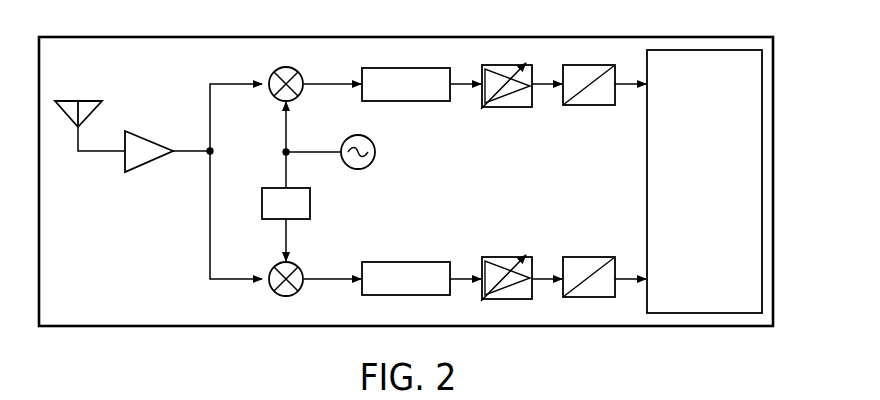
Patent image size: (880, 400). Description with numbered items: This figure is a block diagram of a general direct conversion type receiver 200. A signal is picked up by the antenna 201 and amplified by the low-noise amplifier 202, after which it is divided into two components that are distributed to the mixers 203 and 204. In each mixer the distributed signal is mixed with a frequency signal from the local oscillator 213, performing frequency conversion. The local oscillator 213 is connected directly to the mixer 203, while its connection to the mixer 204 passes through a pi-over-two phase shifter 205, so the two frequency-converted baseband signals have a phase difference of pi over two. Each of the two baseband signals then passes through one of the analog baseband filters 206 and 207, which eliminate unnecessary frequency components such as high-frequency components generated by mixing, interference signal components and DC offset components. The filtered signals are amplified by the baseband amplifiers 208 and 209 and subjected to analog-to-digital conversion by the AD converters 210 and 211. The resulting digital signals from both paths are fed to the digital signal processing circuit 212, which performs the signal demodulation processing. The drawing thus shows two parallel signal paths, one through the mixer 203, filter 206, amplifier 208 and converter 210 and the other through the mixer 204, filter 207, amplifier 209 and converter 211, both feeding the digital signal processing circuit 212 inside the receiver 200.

The direct conversion type receiver 200 is at (240, 37).
The antenna 201 is at (87, 100).
The low-noise amplifier 202 is at (155, 131).
The mixer 203 is at (297, 71).
The mixer 204 is at (297, 266).
The π/2 phase shifter 205 is at (310, 202).
The analog baseband filter 206 is at (422, 102).
The analog baseband filter 207 is at (421, 261).
The baseband amplifier 208 is at (508, 107).
The baseband amplifier 209 is at (507, 256).
The AD converter 210 is at (588, 106).
The AD converter 211 is at (587, 256).
The digital signal processing circuit 212 is at (647, 177).
The local oscillator 213 is at (375, 153).